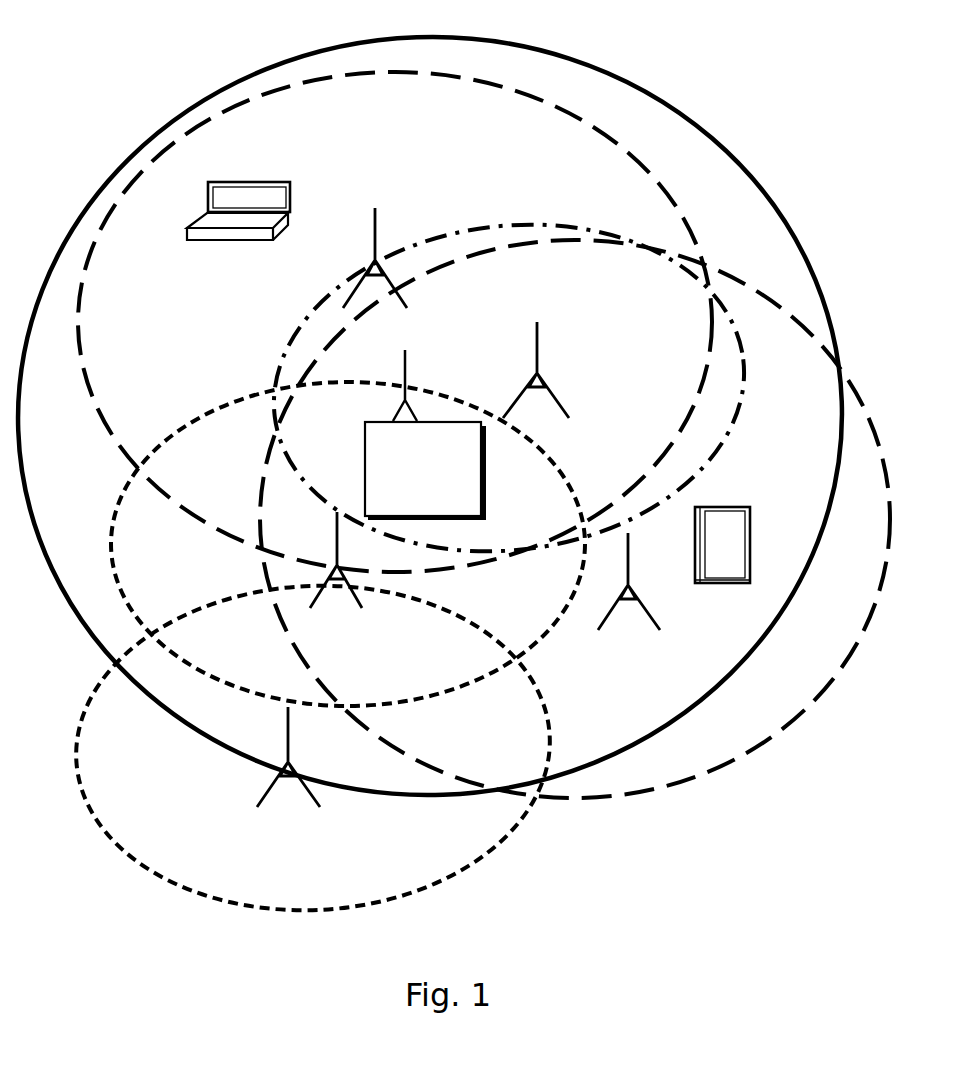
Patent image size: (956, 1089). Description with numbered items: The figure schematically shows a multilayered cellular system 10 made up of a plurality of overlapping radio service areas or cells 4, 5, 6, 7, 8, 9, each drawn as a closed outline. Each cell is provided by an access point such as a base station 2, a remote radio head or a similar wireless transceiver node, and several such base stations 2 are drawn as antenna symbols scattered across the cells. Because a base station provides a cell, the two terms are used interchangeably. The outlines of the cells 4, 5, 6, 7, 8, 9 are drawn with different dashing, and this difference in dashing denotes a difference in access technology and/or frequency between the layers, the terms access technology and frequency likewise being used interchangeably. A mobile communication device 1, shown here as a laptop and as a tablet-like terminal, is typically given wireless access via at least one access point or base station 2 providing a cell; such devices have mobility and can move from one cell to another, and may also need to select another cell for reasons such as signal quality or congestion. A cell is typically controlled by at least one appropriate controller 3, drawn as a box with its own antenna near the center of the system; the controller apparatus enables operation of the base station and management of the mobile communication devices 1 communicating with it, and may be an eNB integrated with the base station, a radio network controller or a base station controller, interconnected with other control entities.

The mobile communication device 1 is at (235, 200).
The base station 2 is at (537, 338).
The controller 3 is at (424, 434).
The cell 4 is at (680, 116).
The cell 5 is at (733, 752).
The cell 6 is at (480, 863).
The cell 7 is at (116, 521).
The cell 8 is at (144, 177).
The cell 9 is at (400, 234).
The multilayered cellular system 10 is at (143, 72).